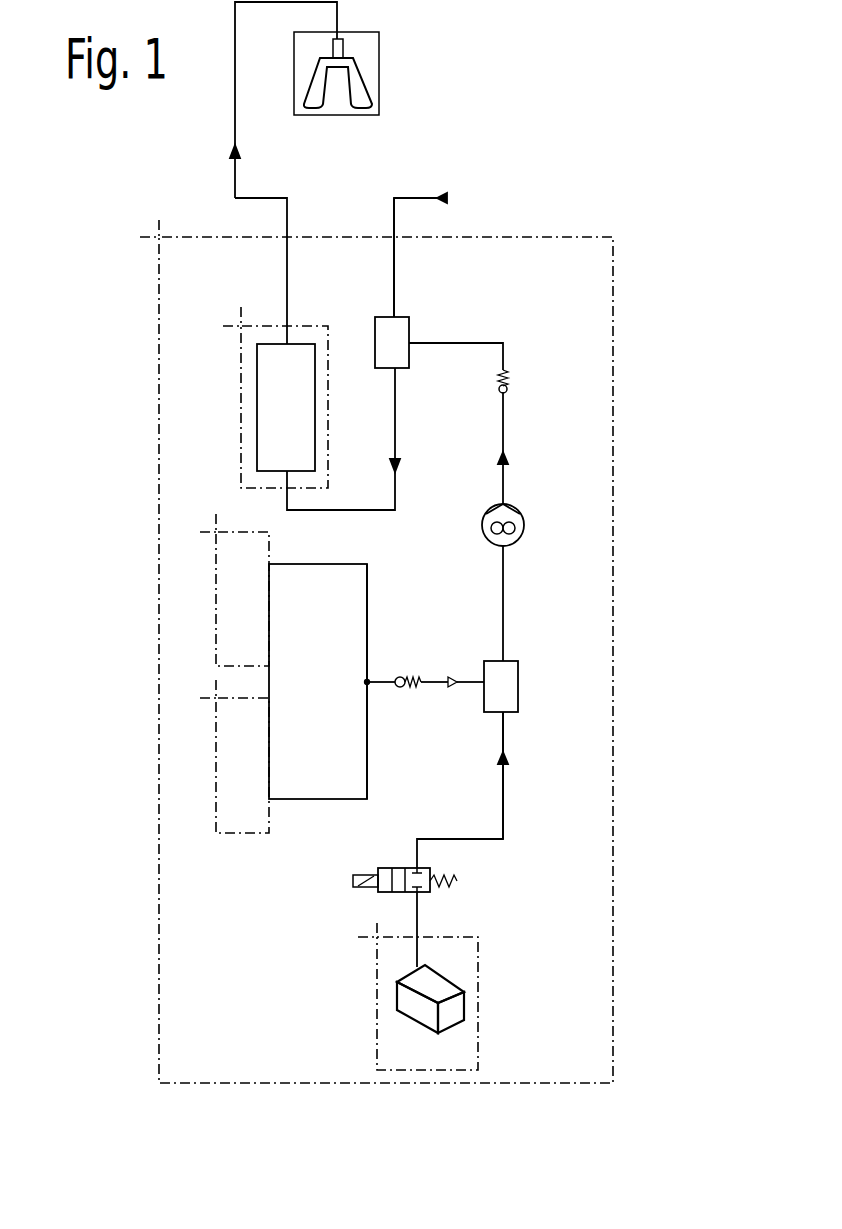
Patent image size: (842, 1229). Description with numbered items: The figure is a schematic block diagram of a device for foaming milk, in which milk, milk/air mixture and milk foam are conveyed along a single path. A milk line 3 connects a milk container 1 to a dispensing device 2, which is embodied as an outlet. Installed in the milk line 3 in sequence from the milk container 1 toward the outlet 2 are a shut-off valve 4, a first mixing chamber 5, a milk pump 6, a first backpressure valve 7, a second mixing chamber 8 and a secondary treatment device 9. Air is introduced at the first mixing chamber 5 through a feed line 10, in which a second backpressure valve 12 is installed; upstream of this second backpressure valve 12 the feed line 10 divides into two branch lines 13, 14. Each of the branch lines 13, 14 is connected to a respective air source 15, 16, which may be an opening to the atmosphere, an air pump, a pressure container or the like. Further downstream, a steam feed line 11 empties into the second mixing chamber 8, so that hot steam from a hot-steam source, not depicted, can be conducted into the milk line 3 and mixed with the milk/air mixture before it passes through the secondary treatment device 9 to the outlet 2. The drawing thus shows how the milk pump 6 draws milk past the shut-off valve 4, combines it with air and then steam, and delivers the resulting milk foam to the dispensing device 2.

The milk container 1 is at (457, 1008).
The dispensing device 2 is at (363, 87).
The milk line 3 is at (504, 809).
The shut-off valve 4 is at (378, 892).
The first mixing chamber 5 is at (518, 682).
The milk pump 6 is at (523, 522).
The first backpressure valve 7 is at (508, 390).
The second mixing chamber 8 is at (409, 317).
The secondary treatment device 9 is at (241, 386).
The feed line 10 is at (430, 685).
The steam feed line 11 is at (393, 220).
The second backpressure valve 12 is at (412, 679).
The branch line 13 is at (368, 778).
The branch line 14 is at (368, 610).
The air source 15 is at (214, 760).
The air source 16 is at (214, 594).